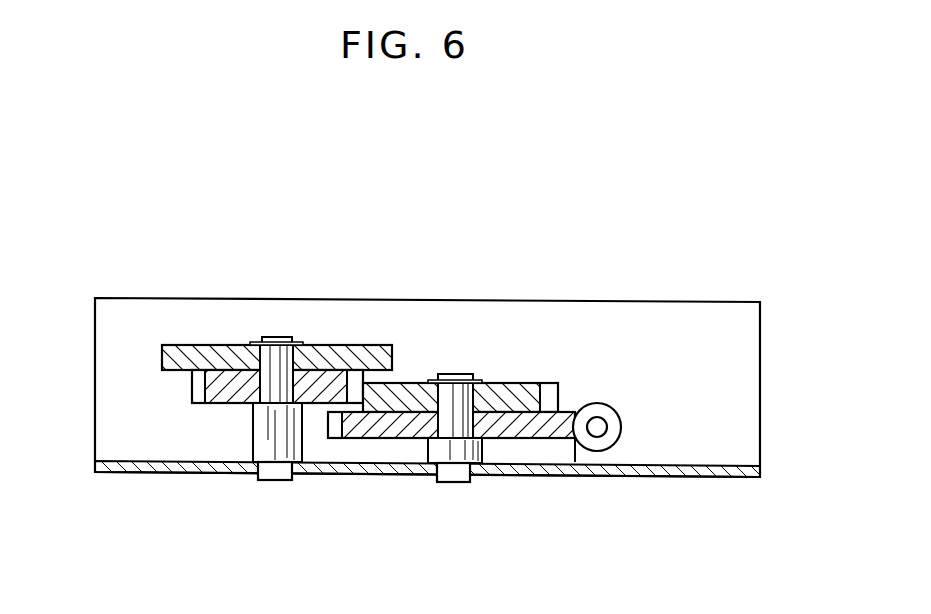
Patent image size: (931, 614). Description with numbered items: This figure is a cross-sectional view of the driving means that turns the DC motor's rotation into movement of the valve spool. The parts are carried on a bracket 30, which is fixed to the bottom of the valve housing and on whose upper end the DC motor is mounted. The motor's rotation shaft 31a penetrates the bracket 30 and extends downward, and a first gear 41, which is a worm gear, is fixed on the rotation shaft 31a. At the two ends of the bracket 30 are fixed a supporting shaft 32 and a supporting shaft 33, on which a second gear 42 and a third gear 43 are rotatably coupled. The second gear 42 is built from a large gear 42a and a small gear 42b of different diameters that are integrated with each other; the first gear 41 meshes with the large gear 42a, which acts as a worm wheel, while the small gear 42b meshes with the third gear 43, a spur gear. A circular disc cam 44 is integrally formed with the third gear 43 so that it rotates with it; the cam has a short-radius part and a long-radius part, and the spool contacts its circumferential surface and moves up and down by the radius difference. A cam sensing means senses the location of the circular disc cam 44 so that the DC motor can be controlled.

The bracket 30 is at (745, 340).
The rotation shaft 31a is at (608, 428).
The supporting shaft 32 is at (453, 374).
The supporting shaft 33 is at (278, 337).
The first gear 41 is at (614, 450).
The second gear 42 is at (491, 396).
The large gear 42a is at (552, 430).
The small gear 42b is at (522, 383).
The third gear 43 is at (192, 386).
The circular disc cam 44 is at (200, 345).